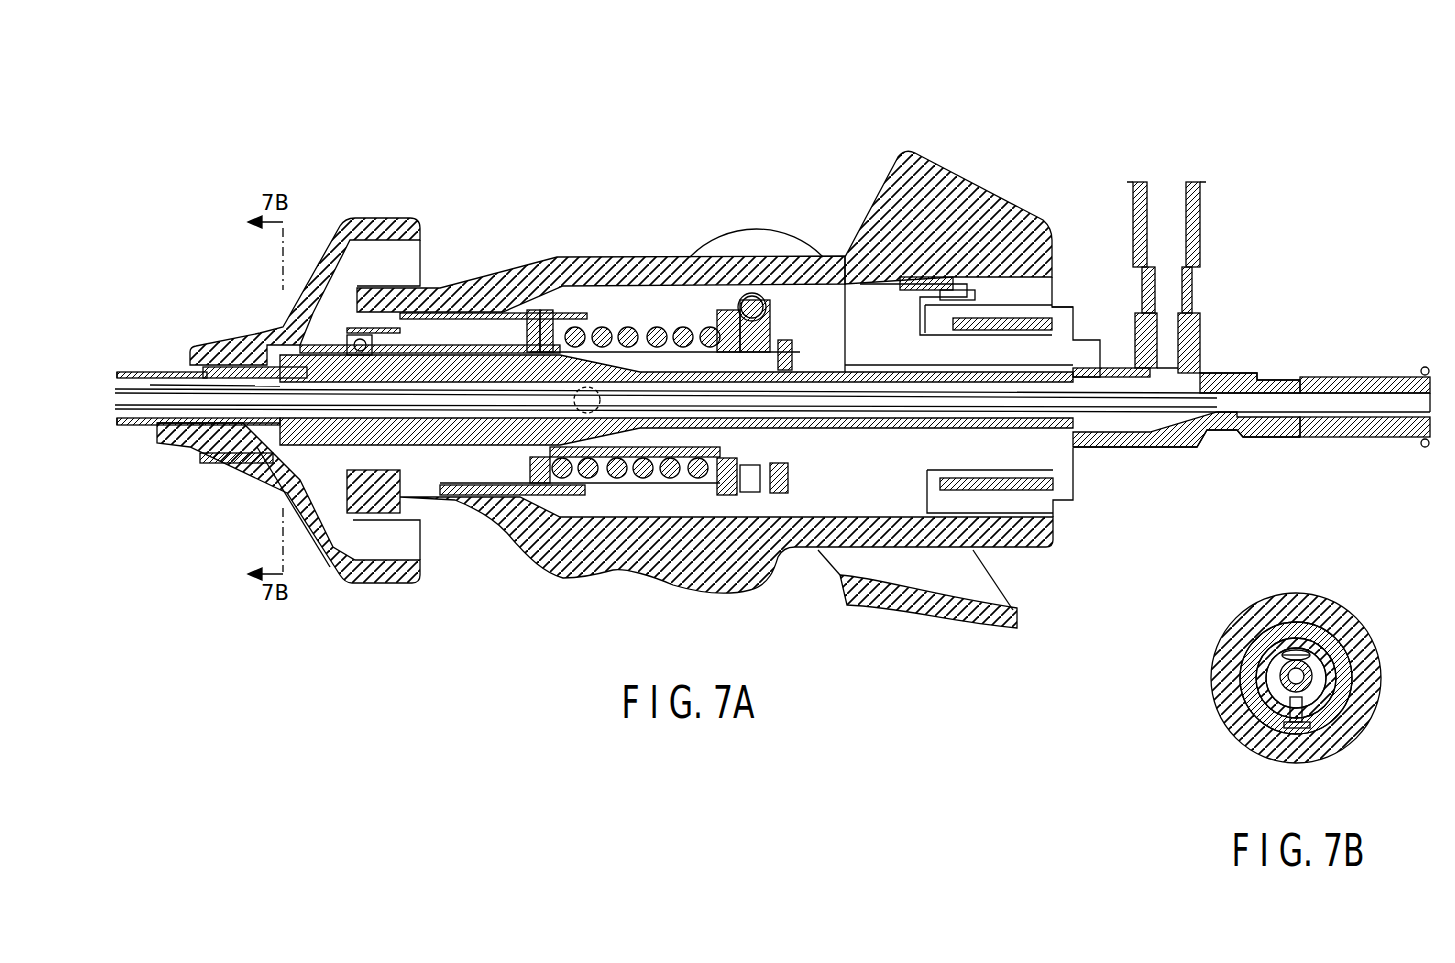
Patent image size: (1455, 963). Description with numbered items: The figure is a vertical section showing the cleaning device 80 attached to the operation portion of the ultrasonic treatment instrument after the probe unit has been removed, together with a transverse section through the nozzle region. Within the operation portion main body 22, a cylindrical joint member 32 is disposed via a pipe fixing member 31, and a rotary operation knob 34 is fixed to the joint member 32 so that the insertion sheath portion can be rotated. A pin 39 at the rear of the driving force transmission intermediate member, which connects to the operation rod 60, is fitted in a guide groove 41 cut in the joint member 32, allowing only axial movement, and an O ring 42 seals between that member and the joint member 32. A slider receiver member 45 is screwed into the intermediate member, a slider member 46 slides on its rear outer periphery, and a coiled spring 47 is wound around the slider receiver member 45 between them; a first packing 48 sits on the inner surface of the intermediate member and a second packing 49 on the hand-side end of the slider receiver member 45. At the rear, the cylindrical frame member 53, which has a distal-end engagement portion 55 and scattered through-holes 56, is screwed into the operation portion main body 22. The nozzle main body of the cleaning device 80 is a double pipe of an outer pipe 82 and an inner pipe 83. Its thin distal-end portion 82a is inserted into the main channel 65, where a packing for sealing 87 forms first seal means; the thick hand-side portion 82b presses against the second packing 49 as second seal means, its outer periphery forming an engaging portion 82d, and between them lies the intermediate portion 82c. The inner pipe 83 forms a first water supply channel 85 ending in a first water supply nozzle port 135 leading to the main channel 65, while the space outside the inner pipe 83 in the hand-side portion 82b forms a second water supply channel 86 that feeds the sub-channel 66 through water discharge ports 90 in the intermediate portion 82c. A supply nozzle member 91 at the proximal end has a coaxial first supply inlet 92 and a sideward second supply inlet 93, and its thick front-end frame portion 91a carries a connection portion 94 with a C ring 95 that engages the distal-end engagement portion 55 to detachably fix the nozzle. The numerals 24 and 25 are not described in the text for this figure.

In FIG. 7A, the operation portion main body 22 is at (640, 257).
In FIG. 7A, the lever 24 is at (752, 293).
In FIG. 7A, the lower lever 25 is at (1017, 620).
In FIG. 7B, the pipe fixing member 31 is at (1340, 668).
In FIG. 7B, the joint member 32 is at (1245, 675).
In FIG. 7A, the rotary operation knob 34 is at (390, 218).
In FIG. 7B, the rotary operation knob 34 is at (1348, 612).
In FIG. 7A, the pin 39 is at (548, 312).
In FIG. 7A, the guide groove 41 is at (527, 312).
In FIG. 7A, the O ring 42 is at (362, 320).
In FIG. 7A, the slider receiver member 45 is at (463, 313).
In FIG. 7A, the slider member 46 is at (712, 545).
In FIG. 7A, the coiled spring 47 is at (630, 478).
In FIG. 7A, the first packing 48 is at (368, 510).
In FIG. 7A, the second packing 49 is at (795, 355).
In FIG. 7A, the frame member 53 is at (960, 330).
In FIG. 7A, the distal-end engagement portion 55 is at (975, 294).
In FIG. 7A, the through-holes 56 is at (920, 320).
In FIG. 7A, the operation rod 60 is at (170, 375).
In FIG. 7B, the operation rod 60 is at (1294, 635).
In FIG. 7A, the main channel 65 is at (138, 425).
In FIG. 7A, the sub-channel 66 is at (130, 375).
In FIG. 7B, the sub-channel 66 is at (1262, 630).
In FIG. 7A, the cleaning device 80 is at (1274, 336).
In FIG. 7A, the outer pipe 82 is at (662, 372).
In FIG. 7B, the outer pipe 82 is at (1258, 715).
In FIG. 7A, the distal-end portion 82a is at (330, 565).
In FIG. 7A, the hand-side portion 82b is at (805, 440).
In FIG. 7A, the intermediate portion 82c is at (468, 500).
In FIG. 7A, the engaging portion 82d is at (783, 560).
In FIG. 7A, the inner pipe 83 is at (862, 410).
In FIG. 7A, the first water supply channel 85 is at (902, 405).
In FIG. 7B, the first water supply channel 85 is at (1310, 735).
In FIG. 7A, the second water supply channel 86 is at (888, 372).
In FIG. 7A, the packing for sealing 87 is at (235, 460).
In FIG. 7A, the water discharge ports 90 is at (612, 327).
In FIG. 7A, the supply nozzle member 91 is at (1155, 448).
In FIG. 7A, the front-end frame portion 91a is at (1068, 307).
In FIG. 7A, the first supply inlet 92 is at (1395, 437).
In FIG. 7A, the second supply inlet 93 is at (1200, 222).
In FIG. 7A, the connection portion 94 is at (958, 290).
In FIG. 7A, the C ring 95 is at (947, 495).
In FIG. 7A, the first water supply nozzle port 135 is at (195, 432).